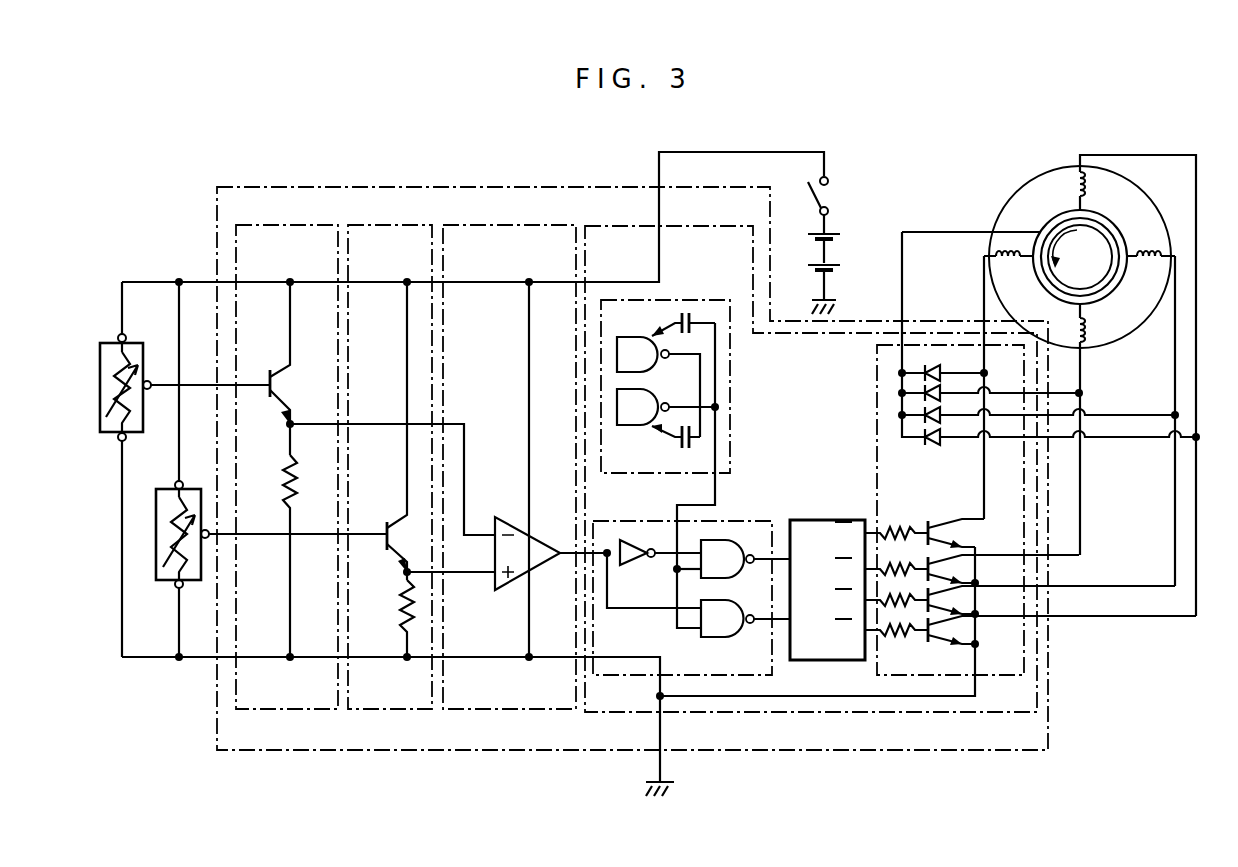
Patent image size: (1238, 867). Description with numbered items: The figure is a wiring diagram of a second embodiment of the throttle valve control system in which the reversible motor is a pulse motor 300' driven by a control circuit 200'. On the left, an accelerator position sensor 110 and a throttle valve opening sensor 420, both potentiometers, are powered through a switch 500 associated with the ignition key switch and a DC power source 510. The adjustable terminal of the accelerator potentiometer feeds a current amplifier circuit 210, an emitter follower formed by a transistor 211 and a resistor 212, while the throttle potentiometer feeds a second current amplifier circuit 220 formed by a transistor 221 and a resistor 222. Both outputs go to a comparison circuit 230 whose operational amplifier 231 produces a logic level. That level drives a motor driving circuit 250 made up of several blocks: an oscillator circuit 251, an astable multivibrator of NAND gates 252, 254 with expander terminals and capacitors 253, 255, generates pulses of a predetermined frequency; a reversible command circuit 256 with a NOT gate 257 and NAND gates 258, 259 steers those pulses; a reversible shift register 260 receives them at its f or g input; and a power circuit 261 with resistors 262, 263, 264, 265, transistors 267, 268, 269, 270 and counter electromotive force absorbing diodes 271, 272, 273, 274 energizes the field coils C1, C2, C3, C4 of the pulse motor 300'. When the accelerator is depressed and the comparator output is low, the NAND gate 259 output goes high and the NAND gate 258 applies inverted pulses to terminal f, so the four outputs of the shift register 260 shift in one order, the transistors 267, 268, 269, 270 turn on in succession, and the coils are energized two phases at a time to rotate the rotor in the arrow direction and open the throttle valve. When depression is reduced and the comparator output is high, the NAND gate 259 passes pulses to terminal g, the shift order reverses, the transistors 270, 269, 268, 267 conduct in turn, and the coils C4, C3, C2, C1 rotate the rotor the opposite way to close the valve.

The accelerator position sensor 110 is at (114, 343).
The throttle valve opening sensor 420 is at (170, 584).
The control circuit 200' is at (718, 478).
The current amplifier circuit 210 is at (280, 225).
The transistor 211 is at (282, 390).
The resistor 212 is at (282, 475).
The current amplifier circuit 220 is at (370, 225).
The transistor 221 is at (396, 520).
The resistor 222 is at (401, 620).
The comparison circuit 230 is at (495, 225).
The operational amplifier 231 is at (512, 517).
The motor driving circuit 250 is at (690, 226).
The oscillator circuit 251 is at (708, 300).
The NAND gate 252 is at (628, 326).
The capacitor 253 is at (688, 338).
The NAND gate 254 is at (640, 425).
The capacitor 255 is at (688, 450).
The reversible command circuit 256 is at (672, 521).
The NOT gate 257 is at (632, 567).
The NAND gate 258 is at (728, 540).
The NAND gate 259 is at (736, 637).
The reversible shift register 260 is at (838, 520).
The power circuit 261 is at (877, 440).
The resistor 262 is at (895, 527).
The resistor 263 is at (915, 552).
The resistor 264 is at (915, 586).
The resistor 265 is at (895, 636).
The transistor 267 is at (958, 515).
The transistor 268 is at (945, 567).
The transistor 269 is at (945, 600).
The transistor 270 is at (948, 632).
The counter electromotive force absorbing diode 271 is at (935, 366).
The counter electromotive force absorbing diode 272 is at (935, 386).
The counter electromotive force absorbing diode 273 is at (935, 410).
The counter electromotive force absorbing diode 274 is at (925, 441).
The pulse motor 300' is at (1050, 376).
The field coil C1 is at (991, 379).
The field coil C2 is at (1098, 429).
The field coil C3 is at (1162, 401).
The field coil C4 is at (1124, 377).
The switch 500 is at (829, 197).
The DC power source 510 is at (834, 256).